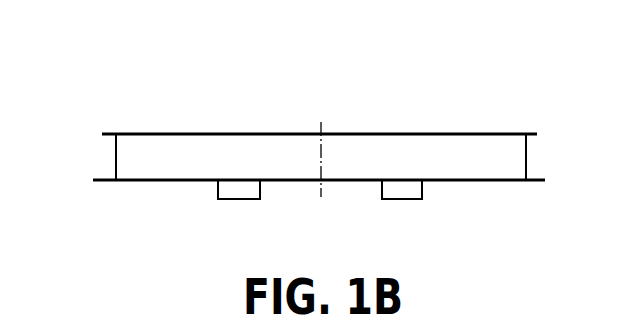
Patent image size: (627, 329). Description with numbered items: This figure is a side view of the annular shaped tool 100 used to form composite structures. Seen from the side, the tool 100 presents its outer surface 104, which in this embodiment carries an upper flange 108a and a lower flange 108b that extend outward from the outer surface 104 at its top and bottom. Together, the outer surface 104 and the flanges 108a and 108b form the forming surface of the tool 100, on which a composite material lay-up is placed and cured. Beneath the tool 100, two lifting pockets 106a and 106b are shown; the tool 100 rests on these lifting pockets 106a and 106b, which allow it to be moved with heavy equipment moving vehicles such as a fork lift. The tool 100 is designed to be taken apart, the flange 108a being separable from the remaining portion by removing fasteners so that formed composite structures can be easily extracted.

The tool 100 is at (469, 82).
The outer surface 104 is at (527, 170).
The flange 108a is at (538, 132).
The flange 108b is at (531, 182).
The lifting pocket 106a is at (230, 193).
The lifting pocket 106b is at (410, 193).